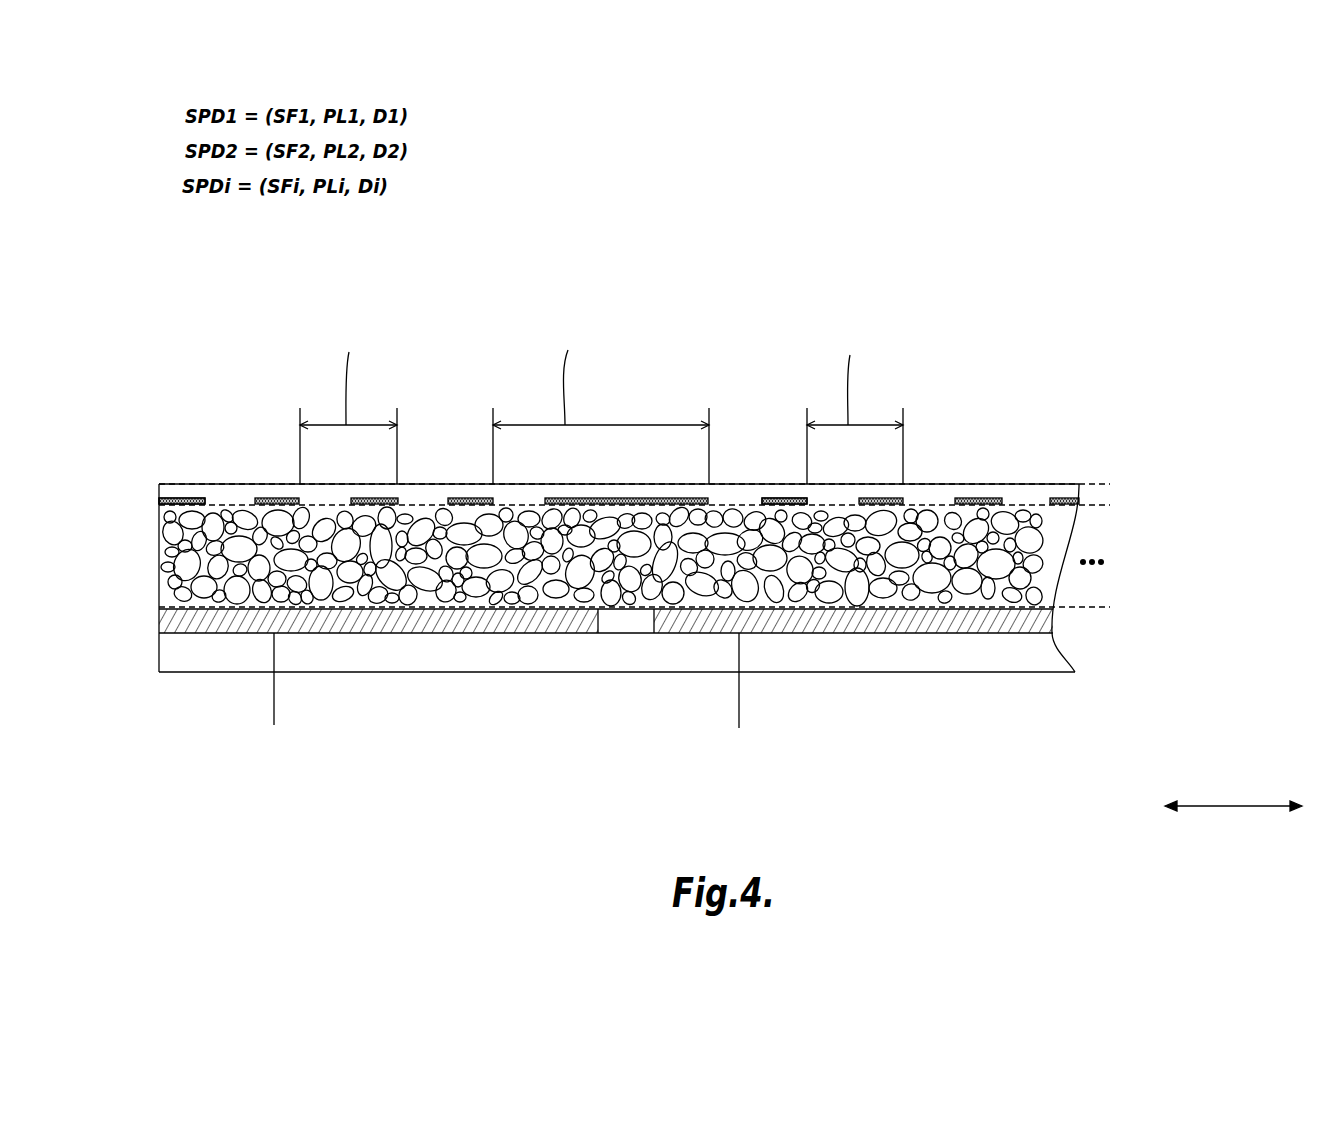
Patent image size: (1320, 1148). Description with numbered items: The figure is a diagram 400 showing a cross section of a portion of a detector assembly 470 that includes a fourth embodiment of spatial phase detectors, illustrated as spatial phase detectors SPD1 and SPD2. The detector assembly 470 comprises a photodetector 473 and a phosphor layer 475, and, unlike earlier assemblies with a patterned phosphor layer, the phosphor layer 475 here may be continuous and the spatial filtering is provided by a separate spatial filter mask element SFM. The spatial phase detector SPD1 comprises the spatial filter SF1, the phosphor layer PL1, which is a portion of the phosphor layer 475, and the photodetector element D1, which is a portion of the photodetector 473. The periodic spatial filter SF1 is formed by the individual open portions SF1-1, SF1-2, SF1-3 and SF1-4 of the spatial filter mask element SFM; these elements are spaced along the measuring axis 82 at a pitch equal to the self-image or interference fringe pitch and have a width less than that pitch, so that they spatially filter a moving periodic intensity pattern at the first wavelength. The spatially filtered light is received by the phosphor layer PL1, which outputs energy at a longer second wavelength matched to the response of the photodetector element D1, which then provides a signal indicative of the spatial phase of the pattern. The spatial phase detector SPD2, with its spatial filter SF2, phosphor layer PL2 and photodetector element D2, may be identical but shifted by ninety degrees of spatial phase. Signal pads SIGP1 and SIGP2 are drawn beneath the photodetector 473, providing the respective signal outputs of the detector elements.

The diagram 400 is at (1036, 200).
The detector assembly 470 is at (987, 299).
The photodetector 473 is at (1117, 607).
The phosphor layer 475 is at (1117, 505).
The measuring axis 82 is at (1248, 806).
The spatial phase detector SPD1 is at (239, 451).
The spatial phase detector SPD2 is at (773, 386).
The spatial filter SF1 is at (153, 484).
The spatial filter element SF1-1 is at (231, 505).
The spatial filter element SF1-2 is at (315, 505).
The spatial filter element SF1-3 is at (421, 505).
The spatial filter element SF1-4 is at (525, 505).
The spatial filter SF2 is at (1112, 484).
The spatial filter mask element SFM is at (1002, 488).
The phosphor layer PL1 is at (194, 590).
The phosphor layer PL2 is at (955, 586).
The photodetector element D1 is at (358, 633).
The photodetector element D2 is at (900, 633).
The first signal pad SIGP1 is at (267, 692).
The second signal pad SIGP2 is at (735, 694).